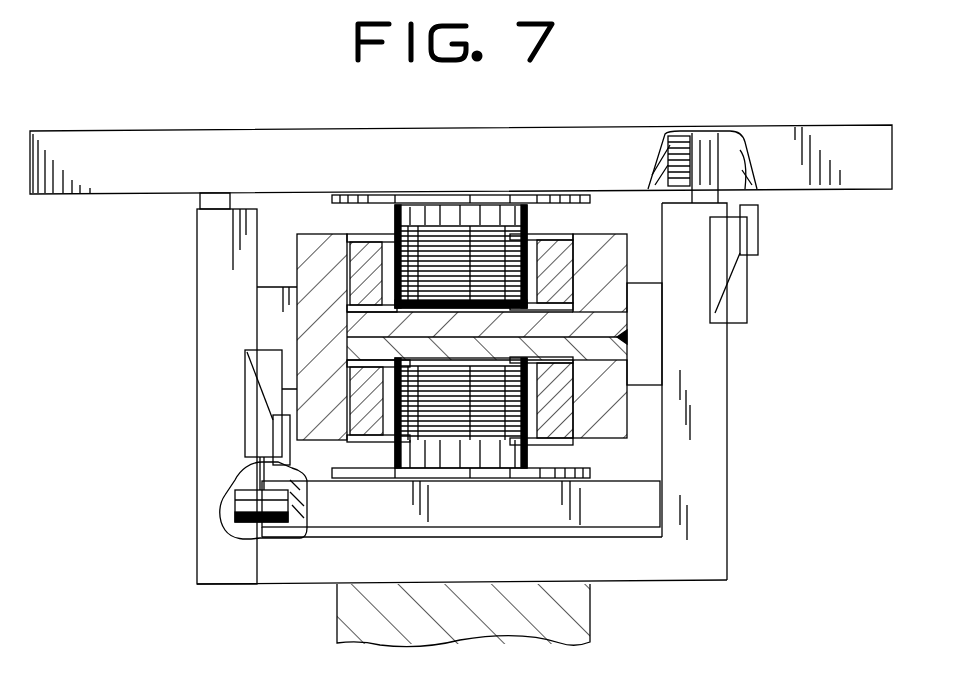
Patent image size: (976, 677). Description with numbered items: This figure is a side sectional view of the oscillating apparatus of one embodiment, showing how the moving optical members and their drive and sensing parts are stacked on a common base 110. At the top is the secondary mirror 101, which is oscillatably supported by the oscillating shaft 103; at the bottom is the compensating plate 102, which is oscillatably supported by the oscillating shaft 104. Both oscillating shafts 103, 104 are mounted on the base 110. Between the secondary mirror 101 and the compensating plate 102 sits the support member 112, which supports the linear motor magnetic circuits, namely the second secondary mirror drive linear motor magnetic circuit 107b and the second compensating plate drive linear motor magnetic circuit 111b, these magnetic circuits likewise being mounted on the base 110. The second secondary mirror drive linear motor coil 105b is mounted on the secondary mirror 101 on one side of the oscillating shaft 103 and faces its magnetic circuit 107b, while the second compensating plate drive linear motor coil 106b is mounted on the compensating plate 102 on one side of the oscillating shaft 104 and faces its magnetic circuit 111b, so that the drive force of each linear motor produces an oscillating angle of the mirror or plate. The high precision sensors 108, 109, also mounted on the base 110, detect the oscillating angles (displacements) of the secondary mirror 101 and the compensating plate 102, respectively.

The secondary mirror 101 is at (626, 144).
The compensating plate 102 is at (637, 500).
The oscillating shaft 103 is at (711, 158).
The oscillating shaft 104 is at (243, 500).
The second secondary mirror drive linear motor coil 105b is at (530, 220).
The second compensating plate drive linear motor coil 106b is at (527, 447).
The second secondary mirror drive linear motor magnetic circuit 107b is at (328, 212).
The high precision sensor 108 is at (750, 233).
The high precision sensor 109 is at (250, 440).
The base 110 is at (663, 567).
The second compensating plate drive linear motor magnetic circuit 111b is at (305, 350).
The support member 112 is at (270, 313).